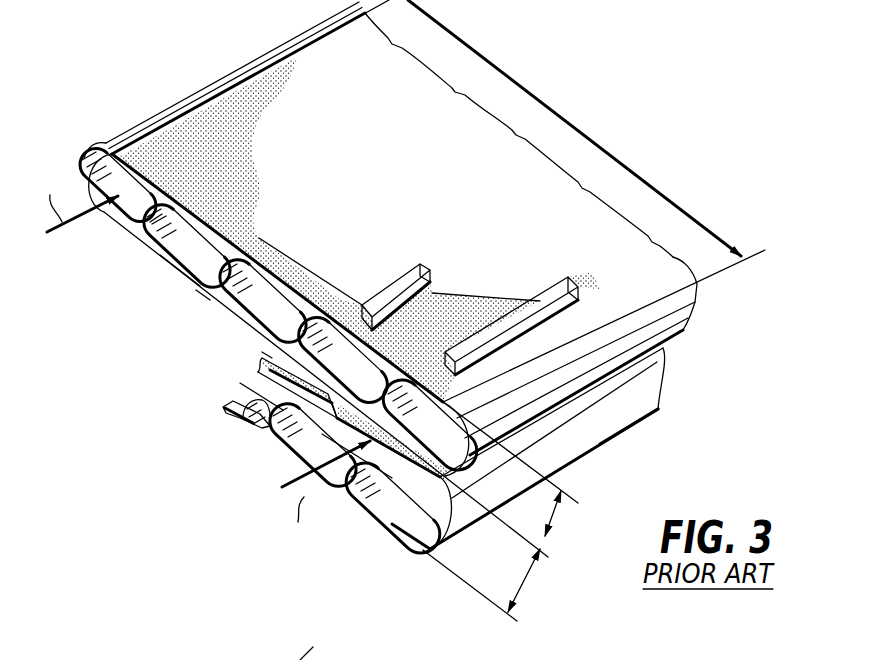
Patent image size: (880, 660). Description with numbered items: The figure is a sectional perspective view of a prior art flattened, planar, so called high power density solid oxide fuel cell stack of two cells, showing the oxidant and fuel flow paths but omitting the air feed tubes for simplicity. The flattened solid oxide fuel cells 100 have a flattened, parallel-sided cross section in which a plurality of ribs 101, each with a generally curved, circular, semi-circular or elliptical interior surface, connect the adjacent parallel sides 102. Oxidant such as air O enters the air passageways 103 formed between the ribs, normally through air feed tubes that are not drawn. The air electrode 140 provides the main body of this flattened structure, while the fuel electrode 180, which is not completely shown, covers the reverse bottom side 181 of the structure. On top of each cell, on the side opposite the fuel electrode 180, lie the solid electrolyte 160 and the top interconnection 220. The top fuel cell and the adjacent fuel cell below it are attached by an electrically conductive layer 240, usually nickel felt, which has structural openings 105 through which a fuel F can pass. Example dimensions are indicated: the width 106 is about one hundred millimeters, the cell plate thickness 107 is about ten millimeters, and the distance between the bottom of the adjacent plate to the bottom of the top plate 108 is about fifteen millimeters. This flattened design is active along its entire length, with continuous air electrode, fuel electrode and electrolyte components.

The flattened solid oxide fuel cells 100 is at (130, 66).
The ribs 101 is at (424, 278).
The parallel sides 102 is at (252, 336).
The air passageways 103 is at (213, 262).
The structural openings 105 is at (296, 461).
The width 106 is at (548, 103).
The cell plate thickness 107 is at (556, 527).
The distance between the bottom of the adjacent plate to the bottom of the top plate 108 is at (532, 590).
The air electrode 140 is at (186, 274).
The solid electrolyte 160 is at (299, 46).
The fuel electrode 180 is at (262, 352).
The reverse bottom side 181 is at (198, 299).
The top interconnection 220 is at (205, 176).
The electrically conductive layer 240 is at (463, 325).